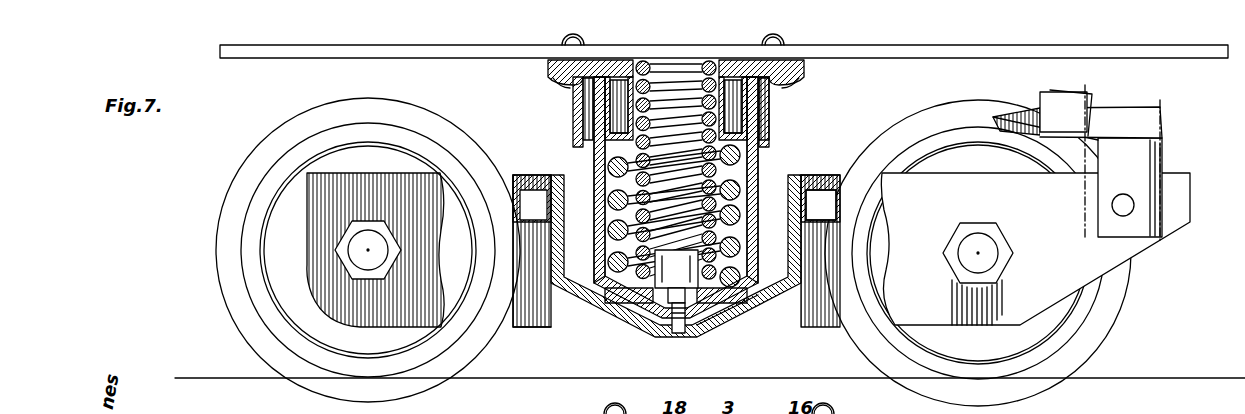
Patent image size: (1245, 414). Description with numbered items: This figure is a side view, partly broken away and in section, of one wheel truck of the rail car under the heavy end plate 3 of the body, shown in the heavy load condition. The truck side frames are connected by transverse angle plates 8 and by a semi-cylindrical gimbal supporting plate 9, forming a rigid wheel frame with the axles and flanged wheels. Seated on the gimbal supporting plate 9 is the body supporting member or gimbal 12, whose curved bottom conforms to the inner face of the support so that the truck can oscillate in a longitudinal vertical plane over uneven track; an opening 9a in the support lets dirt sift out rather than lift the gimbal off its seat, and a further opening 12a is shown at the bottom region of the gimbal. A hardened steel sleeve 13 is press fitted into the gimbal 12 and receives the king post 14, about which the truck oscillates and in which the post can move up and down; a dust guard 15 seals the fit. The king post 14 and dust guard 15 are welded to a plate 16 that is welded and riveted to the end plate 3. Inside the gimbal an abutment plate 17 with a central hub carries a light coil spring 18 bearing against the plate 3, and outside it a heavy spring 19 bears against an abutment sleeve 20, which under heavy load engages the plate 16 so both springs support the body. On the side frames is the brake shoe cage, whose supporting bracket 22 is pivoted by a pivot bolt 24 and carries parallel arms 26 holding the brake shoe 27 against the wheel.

The heavy end plate 3 is at (506, 52).
The transverse angle plate 8 is at (552, 226).
The gimbal supporting plate 9 is at (690, 332).
The opening 9a is at (678, 334).
The body supporting member or gimbal 12 is at (770, 180).
The tube bottom 12a is at (735, 324).
The hardened steel sleeve 13 is at (582, 155).
The king post 14 is at (596, 104).
The dust guard 15 is at (573, 100).
The plate 16 is at (776, 58).
The abutment plate 17 is at (638, 322).
The coil spring 18 is at (693, 72).
The heavy spring 19 is at (821, 205).
The abutment sleeve 20 is at (760, 108).
The supporting bracket 22 is at (1164, 158).
The pivot bolt 24 is at (1112, 205).
The arm 26 is at (1130, 120).
The brake shoe 27 is at (1030, 128).